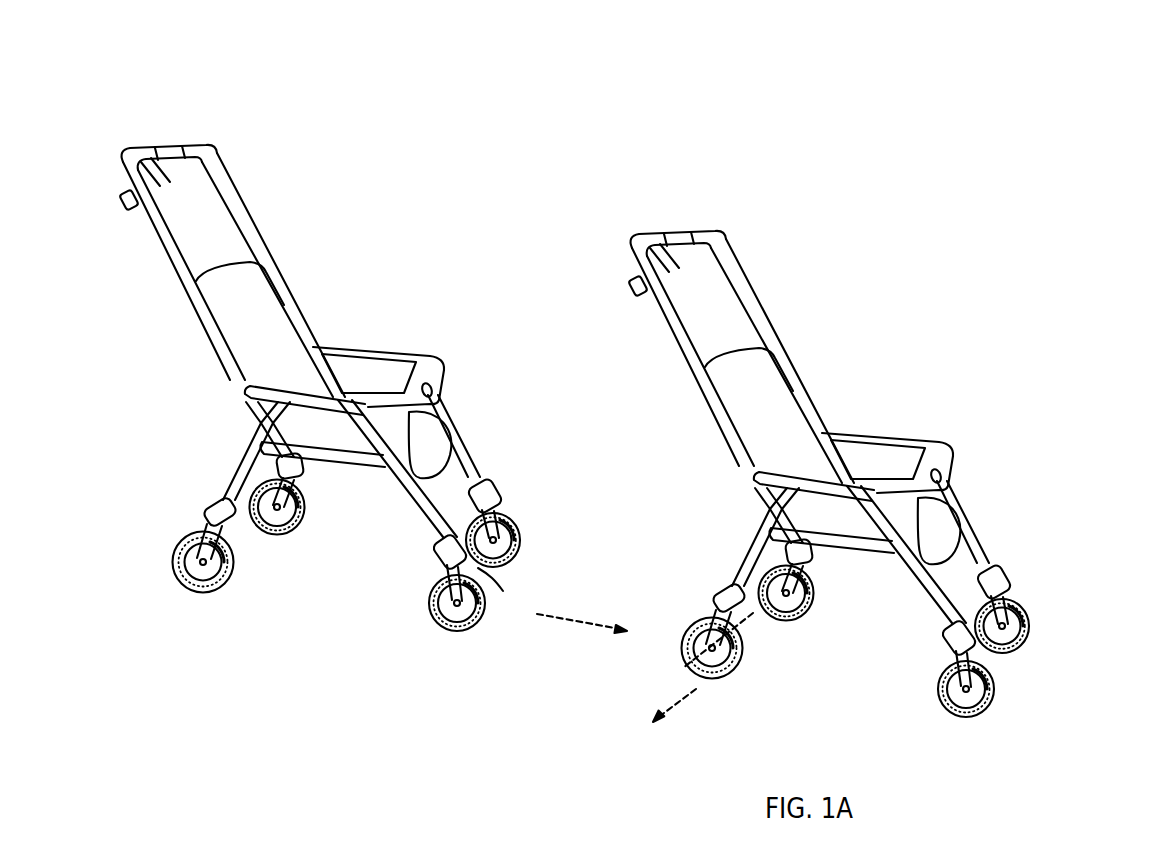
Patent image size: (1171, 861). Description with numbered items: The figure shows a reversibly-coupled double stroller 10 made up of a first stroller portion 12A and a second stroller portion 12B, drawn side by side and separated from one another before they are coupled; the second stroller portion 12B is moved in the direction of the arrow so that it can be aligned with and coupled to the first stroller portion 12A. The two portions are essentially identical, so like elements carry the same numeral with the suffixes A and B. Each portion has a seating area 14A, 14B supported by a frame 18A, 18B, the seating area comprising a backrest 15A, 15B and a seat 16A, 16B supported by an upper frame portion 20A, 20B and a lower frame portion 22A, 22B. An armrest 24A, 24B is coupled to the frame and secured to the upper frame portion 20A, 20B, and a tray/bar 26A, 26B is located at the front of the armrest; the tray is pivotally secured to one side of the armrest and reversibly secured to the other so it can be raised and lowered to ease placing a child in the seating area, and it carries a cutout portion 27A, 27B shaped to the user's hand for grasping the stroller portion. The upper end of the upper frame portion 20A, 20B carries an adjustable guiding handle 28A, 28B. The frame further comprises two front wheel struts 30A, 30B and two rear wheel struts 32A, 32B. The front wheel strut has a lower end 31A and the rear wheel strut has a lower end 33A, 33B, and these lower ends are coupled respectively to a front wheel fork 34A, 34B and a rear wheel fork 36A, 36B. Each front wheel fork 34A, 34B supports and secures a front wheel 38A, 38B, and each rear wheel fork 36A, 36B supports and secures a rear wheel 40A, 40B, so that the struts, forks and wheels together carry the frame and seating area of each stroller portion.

The reversibly-coupled double stroller 10 is at (638, 67).
The first stroller portion 12A is at (857, 480).
The second stroller portion 12B is at (386, 256).
The seating area 14A is at (896, 423).
The seating area 14B is at (275, 345).
The backrest 15A is at (715, 386).
The backrest 15B is at (245, 318).
The seat 16A is at (1036, 509).
The seat 16B is at (408, 437).
The frame 18A is at (714, 507).
The frame 18B is at (229, 413).
The upper frame portion 20A is at (723, 361).
The upper frame portion 20B is at (185, 263).
The lower frame portion 22A is at (831, 576).
The lower frame portion 22B is at (342, 460).
The armrest 24A is at (839, 431).
The armrest 24B is at (363, 350).
The tray/bar 26A is at (909, 427).
The tray/bar 26B is at (428, 356).
The cutout portion 27A is at (996, 462).
The cutout portion 27B is at (434, 384).
The adjustable guiding handle 28A is at (643, 248).
The adjustable guiding handle 28B is at (120, 199).
The front wheel strut 30A is at (955, 576).
The front wheel strut 30B is at (478, 472).
The lower end of front wheel strut 31A is at (1026, 566).
The rear wheel strut 32A is at (709, 547).
The rear wheel strut 32B is at (240, 460).
The lower end of rear wheel strut 33A is at (689, 595).
The lower end of rear wheel strut 33B is at (210, 511).
The front wheel fork 34A is at (1055, 604).
The front wheel fork 34B is at (450, 592).
The rear wheel fork 36A is at (756, 669).
The rear wheel fork 36B is at (187, 554).
The front wheel 38A is at (1023, 678).
The front wheel 38B is at (440, 628).
The rear wheel 40A is at (786, 635).
The rear wheel 40B is at (328, 556).